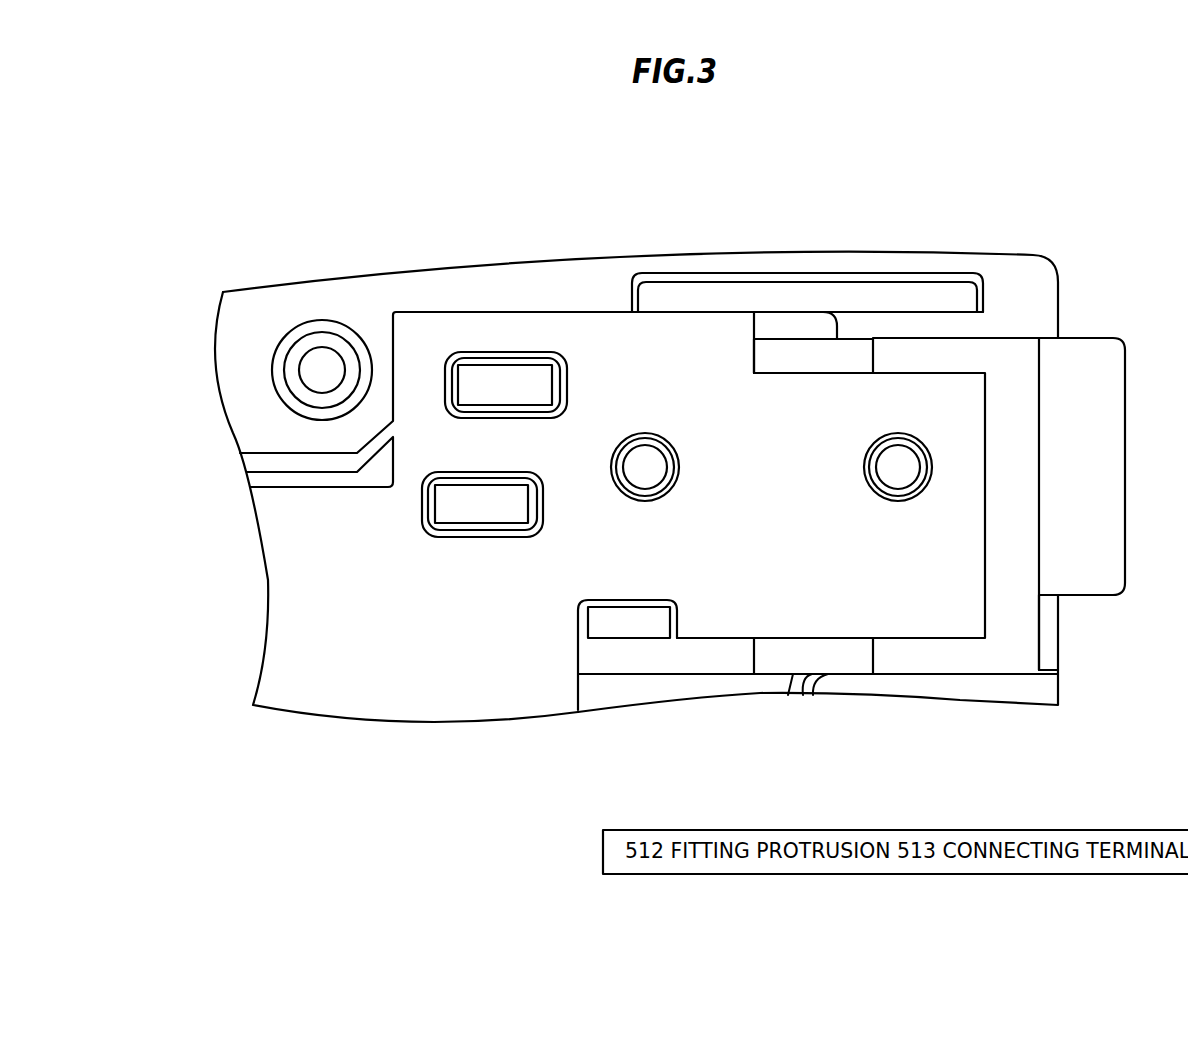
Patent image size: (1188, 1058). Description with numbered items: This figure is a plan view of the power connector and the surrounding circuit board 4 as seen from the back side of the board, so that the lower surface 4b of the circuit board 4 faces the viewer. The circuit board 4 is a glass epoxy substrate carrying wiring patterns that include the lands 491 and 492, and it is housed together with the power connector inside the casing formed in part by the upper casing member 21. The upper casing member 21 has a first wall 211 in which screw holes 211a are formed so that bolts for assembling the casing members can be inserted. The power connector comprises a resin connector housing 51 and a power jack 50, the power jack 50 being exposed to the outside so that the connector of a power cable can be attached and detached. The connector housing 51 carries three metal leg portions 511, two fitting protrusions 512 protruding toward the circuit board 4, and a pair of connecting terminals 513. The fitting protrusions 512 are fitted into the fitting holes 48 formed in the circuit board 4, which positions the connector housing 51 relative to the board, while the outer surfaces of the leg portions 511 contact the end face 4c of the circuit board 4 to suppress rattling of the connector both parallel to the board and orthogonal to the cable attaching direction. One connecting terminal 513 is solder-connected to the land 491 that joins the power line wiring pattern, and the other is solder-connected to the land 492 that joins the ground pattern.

The circuit board 4 is at (343, 698).
The lower surface 4b is at (665, 335).
The end face 4c is at (713, 640).
The upper casing member 21 is at (200, 232).
The first wall 211 is at (1025, 272).
The screw hole 211a is at (318, 357).
The fitting hole 48 is at (625, 470).
The land 491 is at (488, 352).
The land 492 is at (477, 535).
The power jack 50 is at (1100, 422).
The connector housing 51 is at (995, 660).
The leg portion 511 is at (845, 352).
The fitting protrusion 512 is at (645, 480).
The connecting terminal 513 is at (552, 385).